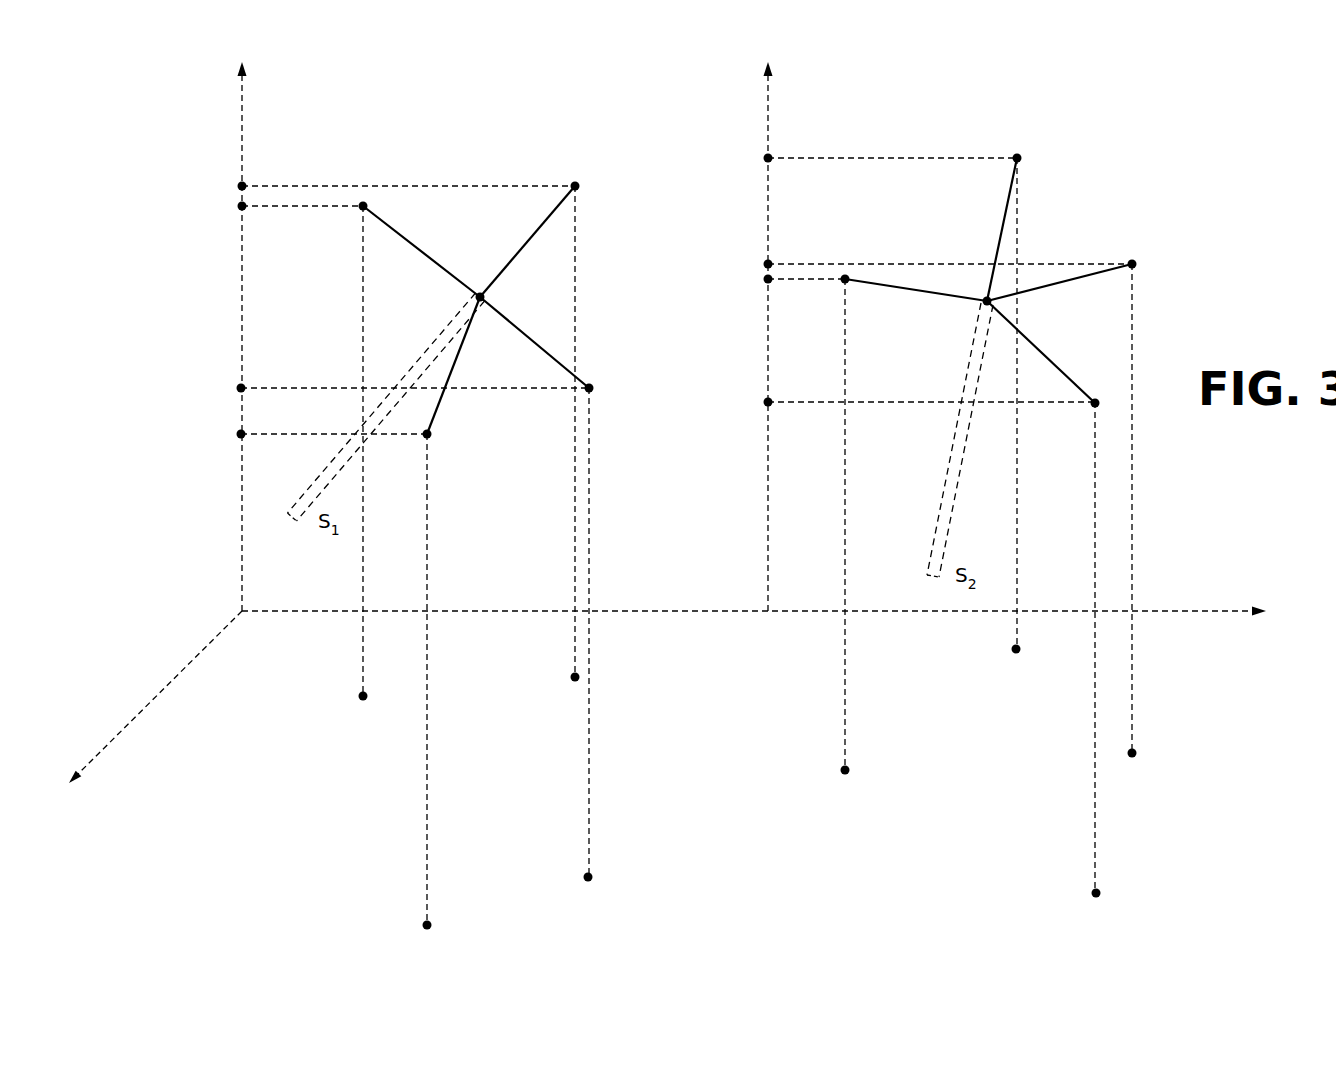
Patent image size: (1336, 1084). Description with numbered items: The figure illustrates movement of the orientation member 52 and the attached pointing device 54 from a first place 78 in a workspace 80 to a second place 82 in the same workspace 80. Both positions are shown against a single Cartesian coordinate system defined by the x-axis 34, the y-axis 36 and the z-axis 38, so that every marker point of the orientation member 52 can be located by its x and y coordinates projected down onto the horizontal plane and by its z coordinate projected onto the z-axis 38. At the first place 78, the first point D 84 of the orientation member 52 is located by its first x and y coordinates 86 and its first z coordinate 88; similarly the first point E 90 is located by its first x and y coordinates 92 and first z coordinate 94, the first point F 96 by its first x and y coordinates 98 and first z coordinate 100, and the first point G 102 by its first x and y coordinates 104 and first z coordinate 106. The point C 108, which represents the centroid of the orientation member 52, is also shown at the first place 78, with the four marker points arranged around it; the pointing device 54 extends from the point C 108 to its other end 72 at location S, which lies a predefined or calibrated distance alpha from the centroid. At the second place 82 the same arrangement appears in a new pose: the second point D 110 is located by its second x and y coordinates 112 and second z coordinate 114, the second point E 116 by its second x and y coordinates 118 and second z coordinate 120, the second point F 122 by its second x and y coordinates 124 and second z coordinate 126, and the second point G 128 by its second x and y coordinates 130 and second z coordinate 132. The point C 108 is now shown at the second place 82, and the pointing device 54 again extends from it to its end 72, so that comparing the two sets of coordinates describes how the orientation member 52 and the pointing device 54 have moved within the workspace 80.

The x-axis 34 is at (1200, 614).
The y-axis 36 is at (172, 684).
The z-axis 38 is at (246, 101).
The orientation member 52 is at (452, 266).
The pointing device 54 is at (342, 481).
The end of pointing device 72 is at (288, 526).
The first place 78 is at (443, 327).
The workspace 80 is at (663, 152).
The second place 82 is at (963, 373).
The point D1 84 is at (363, 202).
The x and y coordinates D1x,y 86 is at (360, 693).
The z coordinate D1z 88 is at (246, 210).
The point E1 90 is at (431, 438).
The x and y coordinates E1x,y 92 is at (422, 925).
The z coordinate E1z 94 is at (245, 438).
The point F1 96 is at (592, 384).
The x and y coordinates F1x,y 98 is at (593, 877).
The z coordinate F1z 100 is at (245, 384).
The point G1 102 is at (575, 182).
The x and y coordinates G1x,y 104 is at (580, 677).
The z coordinate G1z 106 is at (246, 182).
The point C 108 is at (488, 299).
The point D2 110 is at (849, 276).
The x and y coordinates D2x,y 112 is at (850, 770).
The z coordinate D2z 114 is at (772, 283).
The point E2 116 is at (1096, 398).
The x and y coordinates E2x,y 118 is at (1101, 893).
The z coordinate E2z 120 is at (772, 406).
The point F2 122 is at (1131, 259).
The x and y coordinates F2x,y 124 is at (1137, 752).
The z coordinate F2z 126 is at (772, 260).
The point G2 128 is at (1016, 153).
The x and y coordinates G2x,y 130 is at (1011, 647).
The z coordinate G2z 132 is at (772, 154).